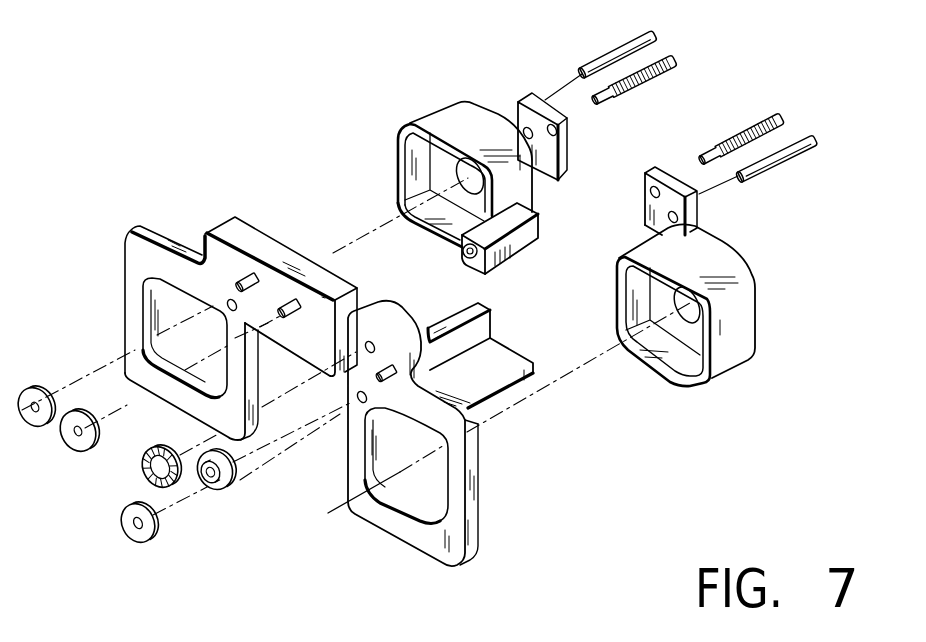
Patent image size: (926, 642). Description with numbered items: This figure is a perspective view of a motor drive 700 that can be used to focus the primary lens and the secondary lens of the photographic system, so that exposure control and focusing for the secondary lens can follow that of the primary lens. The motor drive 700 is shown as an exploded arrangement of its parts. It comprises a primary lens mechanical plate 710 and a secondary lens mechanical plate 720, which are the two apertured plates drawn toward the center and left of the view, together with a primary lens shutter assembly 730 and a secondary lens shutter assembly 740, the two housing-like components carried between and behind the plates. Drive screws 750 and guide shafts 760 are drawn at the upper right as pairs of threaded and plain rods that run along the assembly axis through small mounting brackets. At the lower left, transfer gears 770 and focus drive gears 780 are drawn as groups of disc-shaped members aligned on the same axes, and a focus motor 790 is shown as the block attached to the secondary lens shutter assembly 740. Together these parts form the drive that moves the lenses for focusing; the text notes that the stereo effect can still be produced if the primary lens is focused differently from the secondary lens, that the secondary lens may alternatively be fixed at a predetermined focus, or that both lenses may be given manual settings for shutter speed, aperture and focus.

The motor drive 700 is at (243, 77).
The primary lens mechanical plate 710 is at (437, 555).
The secondary lens mechanical plate 720 is at (268, 243).
The primary lens shutter assembly 730 is at (728, 368).
The secondary lens shutter assembly 740 is at (396, 160).
The drive screws 750 is at (675, 60).
The guide shafts 760 is at (610, 50).
The transfer gears 770 is at (105, 360).
The focus drive gears 780 is at (240, 562).
The focus motor 790 is at (513, 253).